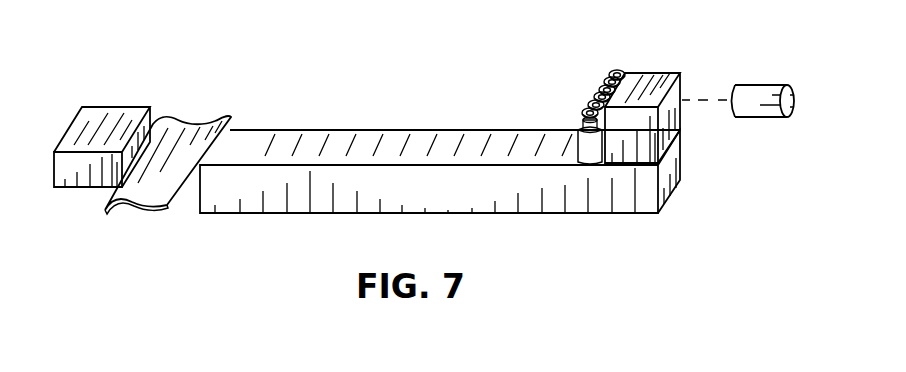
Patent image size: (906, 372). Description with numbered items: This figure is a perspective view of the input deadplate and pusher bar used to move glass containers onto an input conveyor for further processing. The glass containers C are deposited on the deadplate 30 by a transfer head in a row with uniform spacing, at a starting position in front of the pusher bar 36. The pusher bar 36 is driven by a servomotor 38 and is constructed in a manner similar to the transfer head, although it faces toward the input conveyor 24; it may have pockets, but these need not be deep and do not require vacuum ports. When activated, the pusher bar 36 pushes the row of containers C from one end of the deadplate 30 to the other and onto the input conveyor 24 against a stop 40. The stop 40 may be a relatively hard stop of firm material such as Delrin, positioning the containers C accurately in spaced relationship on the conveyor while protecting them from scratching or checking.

The input conveyor 24 is at (172, 127).
The deadplate 30 is at (297, 206).
The pusher bar 36 is at (652, 72).
The servomotor 38 is at (760, 85).
The stop 40 is at (115, 105).
The glass containers C is at (618, 68).